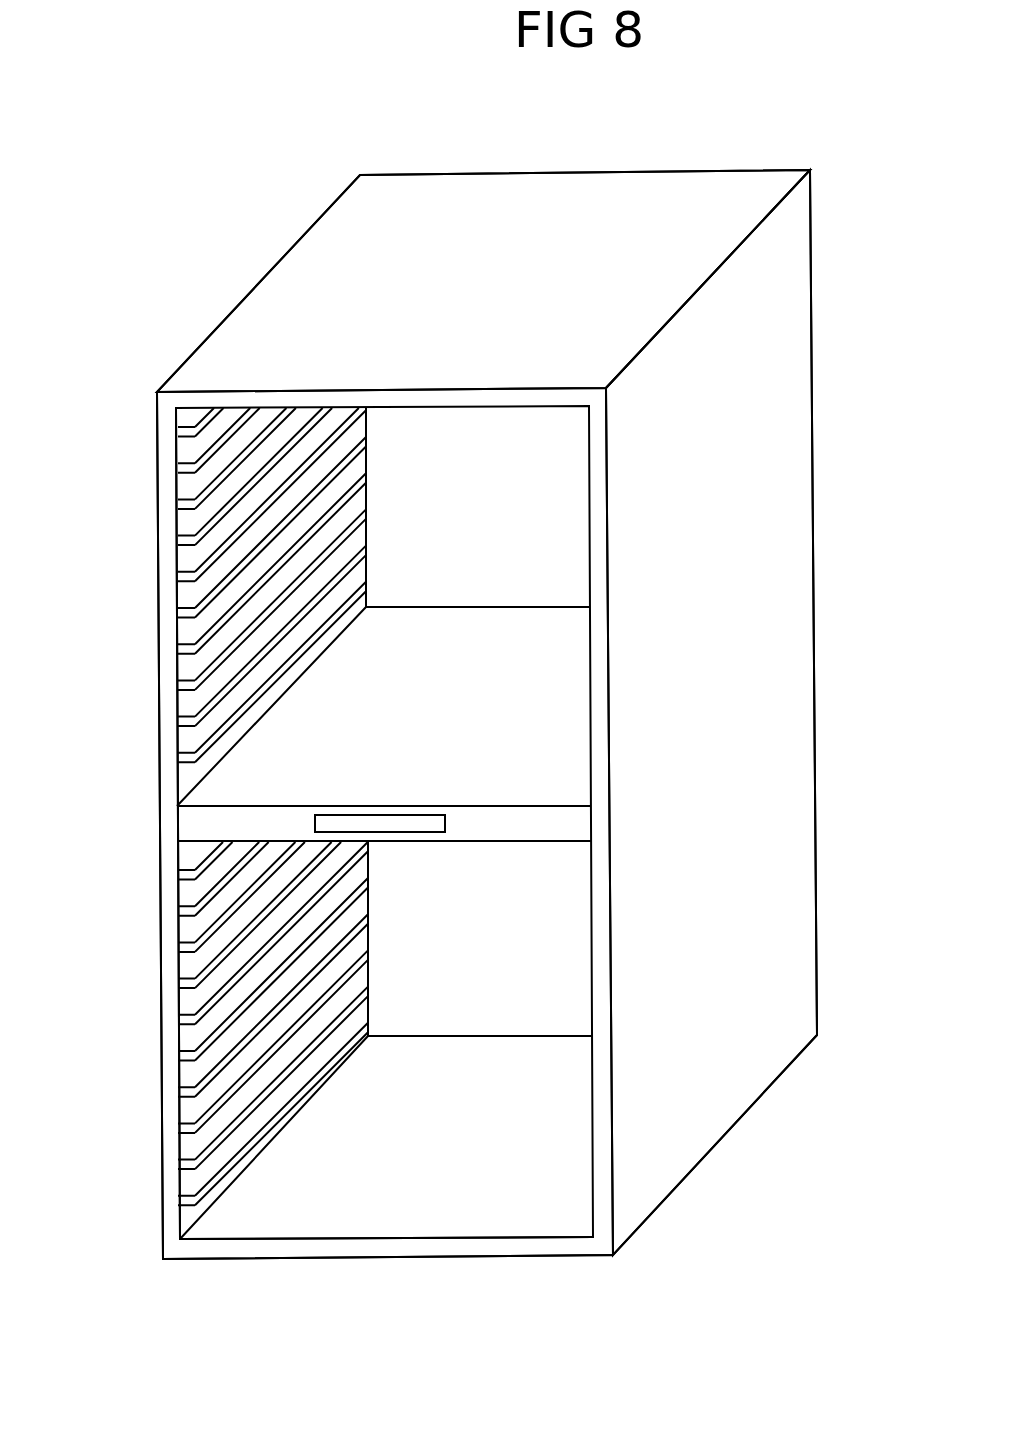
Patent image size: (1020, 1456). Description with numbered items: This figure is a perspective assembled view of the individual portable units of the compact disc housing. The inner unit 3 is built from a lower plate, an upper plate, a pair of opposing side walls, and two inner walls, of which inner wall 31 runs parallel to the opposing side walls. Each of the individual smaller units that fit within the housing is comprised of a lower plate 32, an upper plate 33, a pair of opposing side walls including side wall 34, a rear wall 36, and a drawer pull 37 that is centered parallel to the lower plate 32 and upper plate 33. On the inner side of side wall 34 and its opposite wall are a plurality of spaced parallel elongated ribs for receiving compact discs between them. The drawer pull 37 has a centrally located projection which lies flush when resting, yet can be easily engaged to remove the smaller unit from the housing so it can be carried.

The inner unit 3 is at (279, 321).
The inner wall 31 is at (387, 1218).
The lower plate 32 is at (550, 210).
The upper plate 33 is at (161, 970).
The side wall 34 is at (782, 962).
The rear wall 36 is at (227, 627).
The drawer pull 37 is at (196, 825).